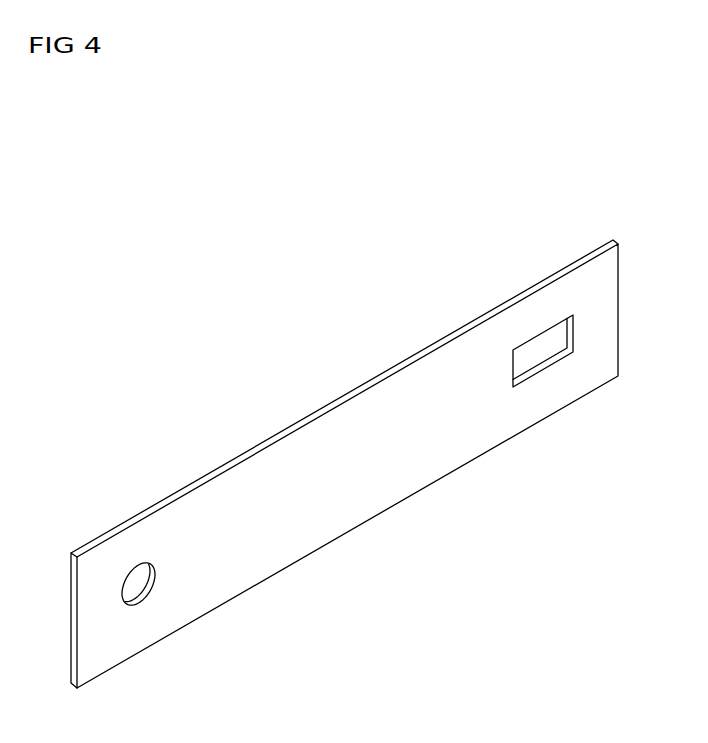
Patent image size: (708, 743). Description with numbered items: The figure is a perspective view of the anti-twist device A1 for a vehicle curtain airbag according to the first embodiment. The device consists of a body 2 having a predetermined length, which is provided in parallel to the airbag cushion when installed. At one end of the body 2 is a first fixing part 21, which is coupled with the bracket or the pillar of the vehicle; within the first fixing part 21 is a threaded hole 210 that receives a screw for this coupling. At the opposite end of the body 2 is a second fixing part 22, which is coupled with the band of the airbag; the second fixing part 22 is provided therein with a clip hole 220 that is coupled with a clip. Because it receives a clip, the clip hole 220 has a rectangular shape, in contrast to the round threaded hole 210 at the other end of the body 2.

The anti-twist device A1 is at (268, 332).
The body 2 is at (360, 483).
The first fixing part 21 is at (139, 545).
The threaded hole 210 is at (132, 582).
The second fixing part 22 is at (537, 318).
The clip hole 220 is at (532, 356).